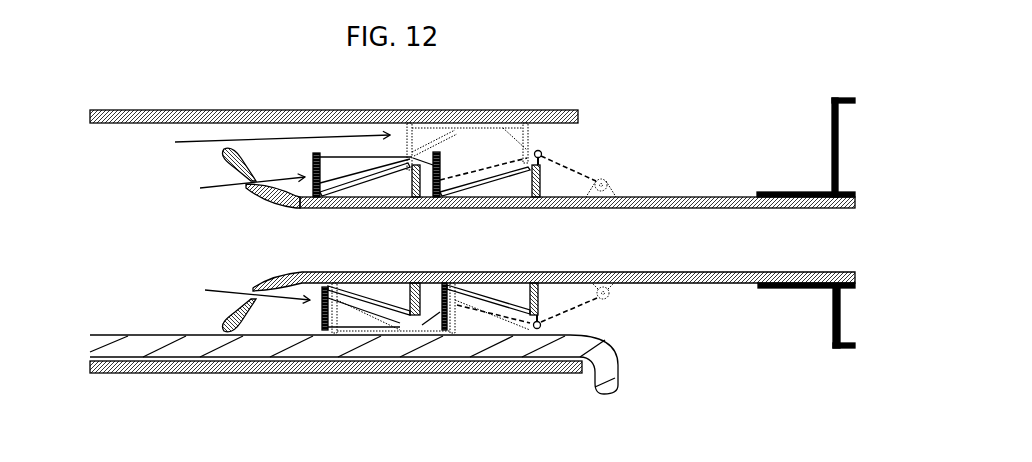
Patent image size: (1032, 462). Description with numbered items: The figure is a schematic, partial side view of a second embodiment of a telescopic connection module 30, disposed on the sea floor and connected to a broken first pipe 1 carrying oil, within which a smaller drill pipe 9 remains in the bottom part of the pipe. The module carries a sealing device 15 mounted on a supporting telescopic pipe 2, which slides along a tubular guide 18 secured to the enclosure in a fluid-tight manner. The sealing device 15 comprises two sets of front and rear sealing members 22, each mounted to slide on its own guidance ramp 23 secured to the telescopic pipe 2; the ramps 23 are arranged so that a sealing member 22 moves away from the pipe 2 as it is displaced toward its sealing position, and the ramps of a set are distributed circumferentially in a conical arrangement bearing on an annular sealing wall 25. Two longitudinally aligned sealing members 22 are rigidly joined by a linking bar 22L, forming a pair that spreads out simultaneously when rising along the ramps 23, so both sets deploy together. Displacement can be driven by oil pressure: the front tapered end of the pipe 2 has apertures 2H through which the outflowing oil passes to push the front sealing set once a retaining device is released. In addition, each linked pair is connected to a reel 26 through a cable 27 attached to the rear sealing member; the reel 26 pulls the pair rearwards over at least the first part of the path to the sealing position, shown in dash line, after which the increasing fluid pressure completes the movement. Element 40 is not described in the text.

The first pipe 1 is at (178, 108).
The telescopic pipe 2 is at (635, 193).
The apertures 2H is at (245, 188).
The drill pipe 9 is at (197, 347).
The sealing device 15 is at (315, 318).
The tubular guide 18 is at (787, 288).
The sealing members 22 is at (315, 153).
The linking bar 22L is at (377, 157).
The guidance ramps 23 is at (373, 300).
The annular sealing wall 25 is at (413, 315).
The reel 26 is at (604, 177).
The cable 27 is at (578, 310).
The connection module 30 is at (768, 127).
The stop bracket 40 is at (838, 97).